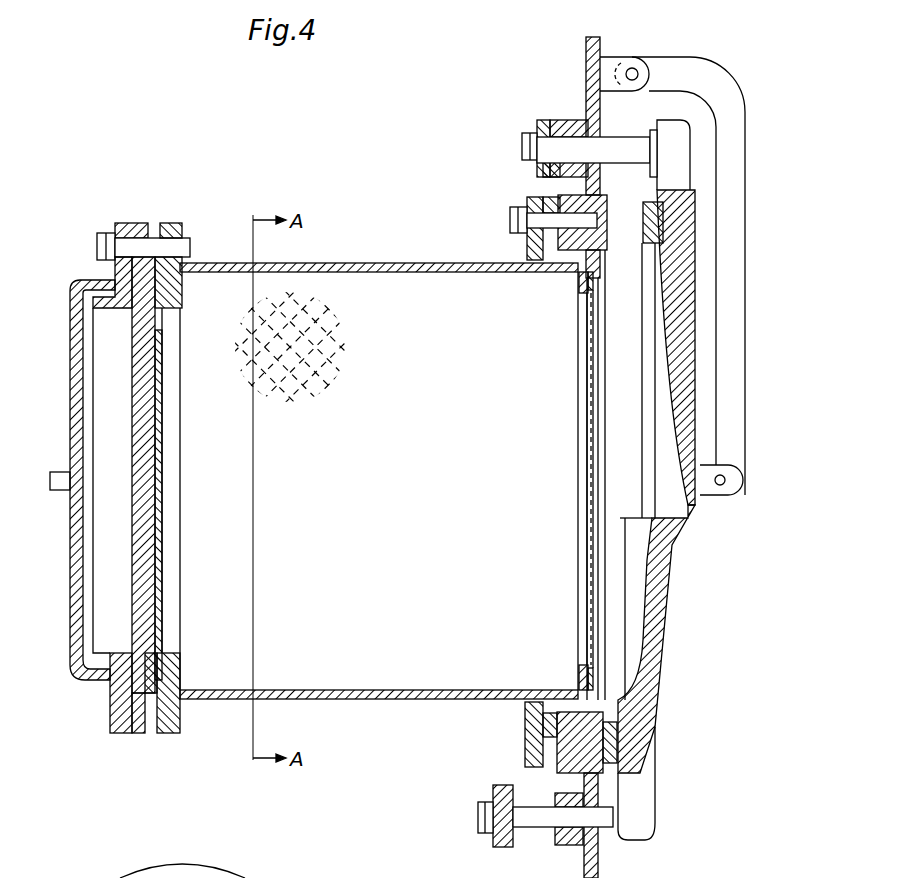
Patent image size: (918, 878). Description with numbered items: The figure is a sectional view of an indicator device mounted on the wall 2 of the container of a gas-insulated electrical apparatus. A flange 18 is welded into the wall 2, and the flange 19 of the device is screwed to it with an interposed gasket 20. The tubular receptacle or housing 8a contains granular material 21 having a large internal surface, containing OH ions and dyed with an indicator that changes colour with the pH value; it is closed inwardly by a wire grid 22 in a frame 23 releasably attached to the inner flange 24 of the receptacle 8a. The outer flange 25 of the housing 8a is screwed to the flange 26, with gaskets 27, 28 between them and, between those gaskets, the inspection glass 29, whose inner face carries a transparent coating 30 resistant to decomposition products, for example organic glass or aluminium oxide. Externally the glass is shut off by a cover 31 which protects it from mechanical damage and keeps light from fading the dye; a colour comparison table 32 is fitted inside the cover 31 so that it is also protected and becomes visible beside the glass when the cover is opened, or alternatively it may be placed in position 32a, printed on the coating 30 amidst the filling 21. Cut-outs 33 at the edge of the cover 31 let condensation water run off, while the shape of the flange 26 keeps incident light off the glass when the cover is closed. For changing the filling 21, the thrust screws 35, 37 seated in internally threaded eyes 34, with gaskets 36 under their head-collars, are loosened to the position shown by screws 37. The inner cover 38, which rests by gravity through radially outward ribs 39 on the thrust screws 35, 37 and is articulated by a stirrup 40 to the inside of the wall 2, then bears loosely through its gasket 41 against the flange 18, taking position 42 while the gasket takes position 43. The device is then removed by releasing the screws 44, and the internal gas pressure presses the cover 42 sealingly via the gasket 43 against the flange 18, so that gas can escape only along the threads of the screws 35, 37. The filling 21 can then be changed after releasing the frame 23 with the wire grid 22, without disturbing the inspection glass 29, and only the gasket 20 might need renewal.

The wall of the container 2 is at (600, 52).
The receptacle or housing 8a is at (425, 268).
The flange 18 is at (608, 233).
The flange of the device 19 is at (528, 202).
The gasket 20 is at (555, 202).
The granular material 21 is at (297, 307).
The wire grid 22 is at (588, 400).
The frame 23 is at (588, 297).
The inner flange 24 is at (578, 282).
The outer flange 25 is at (173, 225).
The flange 26 is at (137, 227).
The gasket 27 is at (163, 287).
The gasket 28 is at (130, 277).
The inspection glass 29 is at (143, 331).
The transparent coating 30 is at (152, 385).
The cover 31 is at (77, 432).
The colour comparison table 32 is at (70, 455).
The position of colour comparison table 32a is at (162, 422).
The cut-outs 33 is at (103, 672).
The internally threaded eyes 34 is at (565, 120).
The thrust screw 35 is at (525, 140).
The gasket 36 is at (545, 170).
The thrust screw 37 is at (485, 823).
The inner cover 38 is at (667, 535).
The ribs 39 is at (668, 127).
The stirrup 40 is at (690, 66).
The gasket 41 is at (648, 207).
The position of inner cover 42 is at (660, 647).
The position of gasket 43 is at (627, 748).
The screws 44 is at (513, 225).